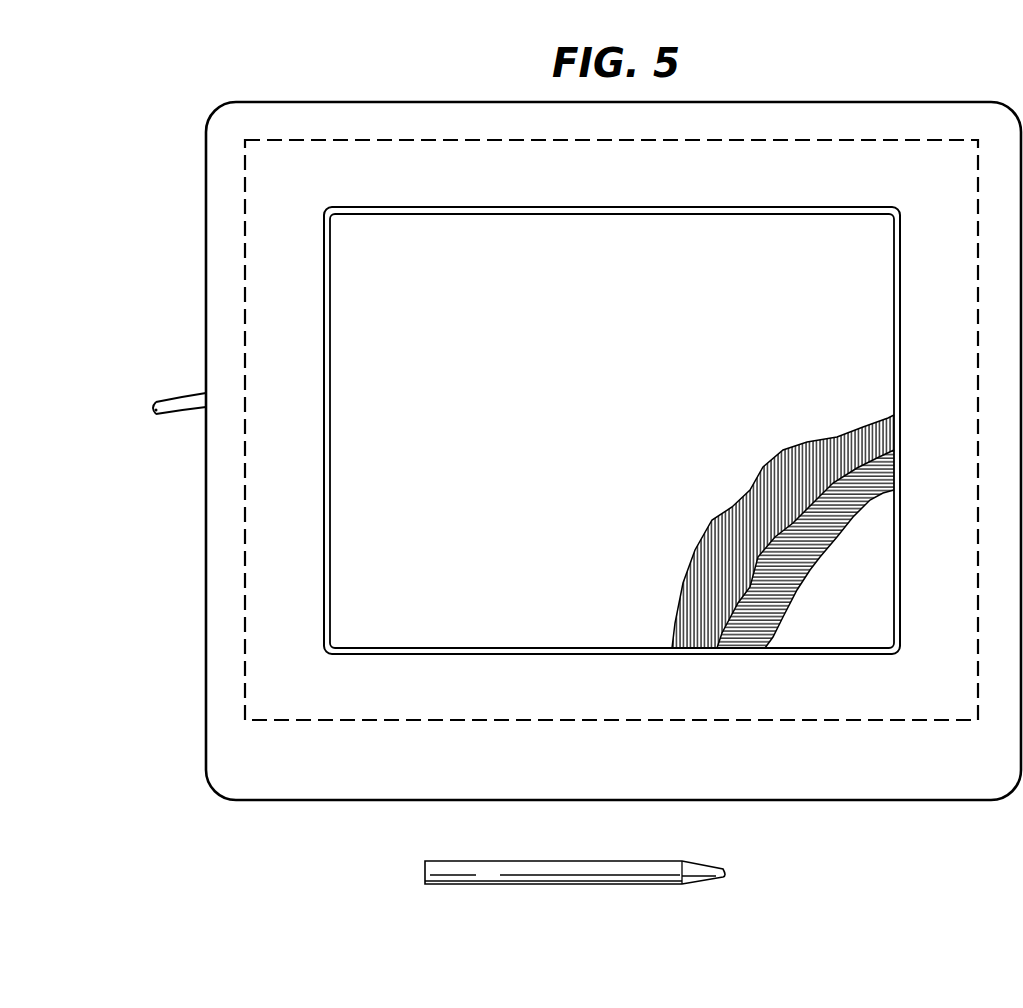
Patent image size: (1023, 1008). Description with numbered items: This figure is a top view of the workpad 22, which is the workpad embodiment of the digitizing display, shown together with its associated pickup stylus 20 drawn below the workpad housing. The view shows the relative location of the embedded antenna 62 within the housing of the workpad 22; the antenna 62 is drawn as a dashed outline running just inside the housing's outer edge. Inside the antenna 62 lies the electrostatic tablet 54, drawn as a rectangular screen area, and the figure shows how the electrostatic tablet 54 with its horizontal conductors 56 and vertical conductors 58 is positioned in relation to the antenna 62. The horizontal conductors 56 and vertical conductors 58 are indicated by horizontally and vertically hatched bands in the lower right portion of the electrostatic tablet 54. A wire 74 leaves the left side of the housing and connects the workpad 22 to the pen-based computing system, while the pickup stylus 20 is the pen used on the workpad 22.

The pickup stylus 20 is at (592, 861).
The workpad 22 is at (200, 561).
The electrostatic tablet 54 is at (589, 406).
The horizontal conductors 56 is at (747, 638).
The vertical conductors 58 is at (798, 445).
The embedded antenna 62 is at (970, 329).
The wire 74 is at (163, 414).